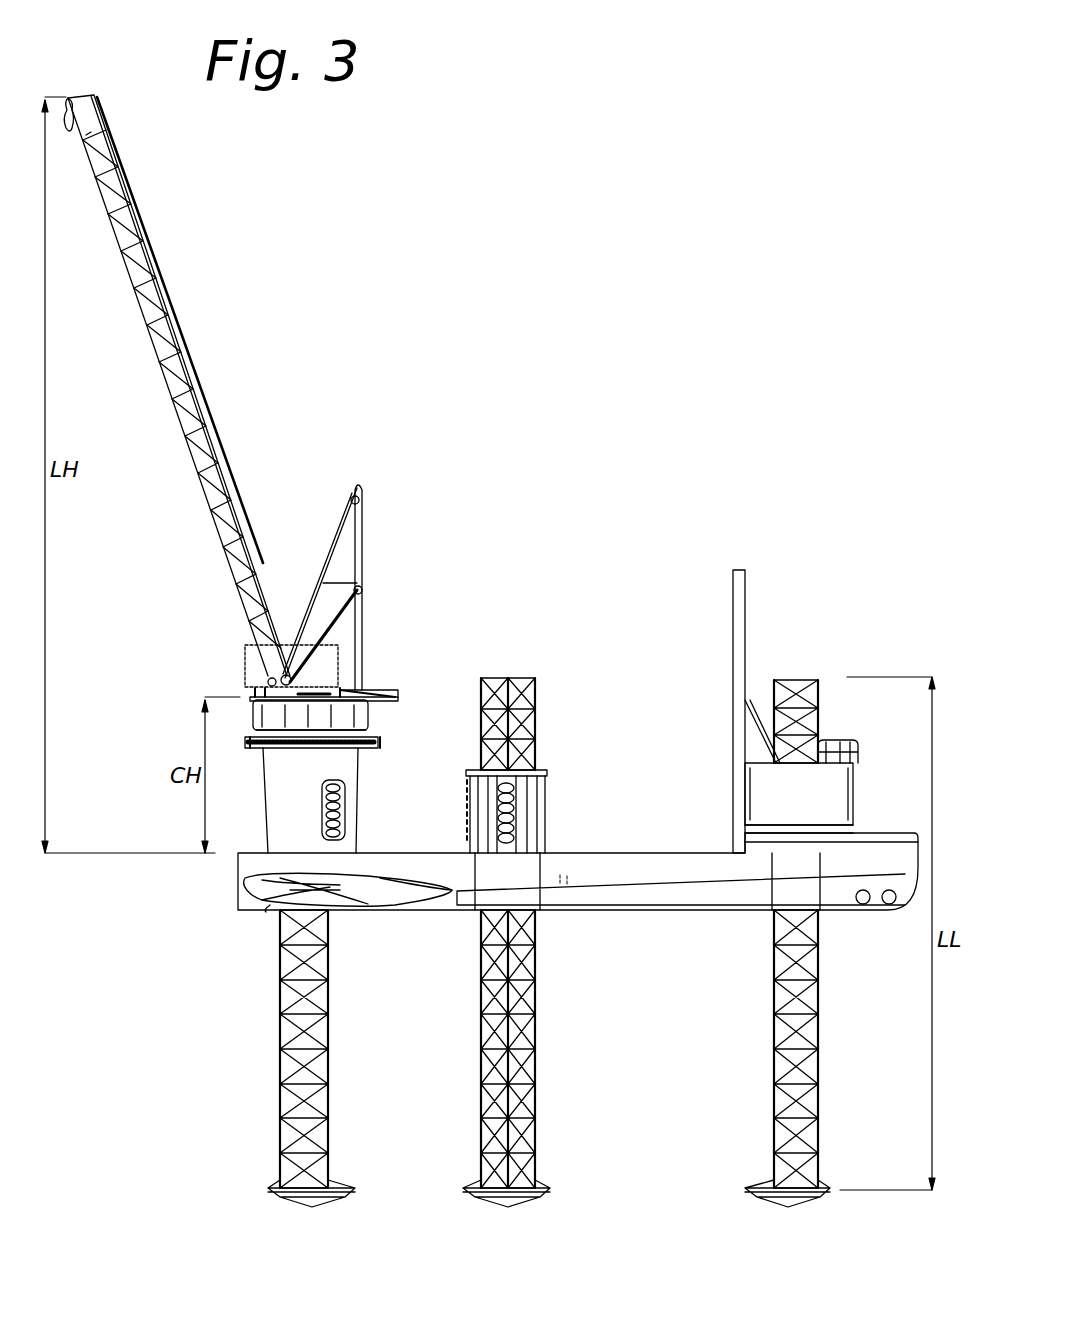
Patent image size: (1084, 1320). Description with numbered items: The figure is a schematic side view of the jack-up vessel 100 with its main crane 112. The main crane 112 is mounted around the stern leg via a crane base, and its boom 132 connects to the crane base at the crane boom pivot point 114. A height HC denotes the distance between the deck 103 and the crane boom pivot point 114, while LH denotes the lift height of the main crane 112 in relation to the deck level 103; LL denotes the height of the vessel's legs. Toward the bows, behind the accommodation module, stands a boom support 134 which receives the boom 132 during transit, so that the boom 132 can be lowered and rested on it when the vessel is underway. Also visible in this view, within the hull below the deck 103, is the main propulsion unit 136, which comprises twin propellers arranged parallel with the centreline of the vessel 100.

The vessel 100 is at (612, 501).
The deck 103 is at (416, 853).
The main crane 112 is at (231, 440).
The crane boom pivot point 114 is at (273, 681).
The boom 132 is at (108, 158).
The boom support 134 is at (740, 678).
The main propulsion unit 136 is at (268, 910).